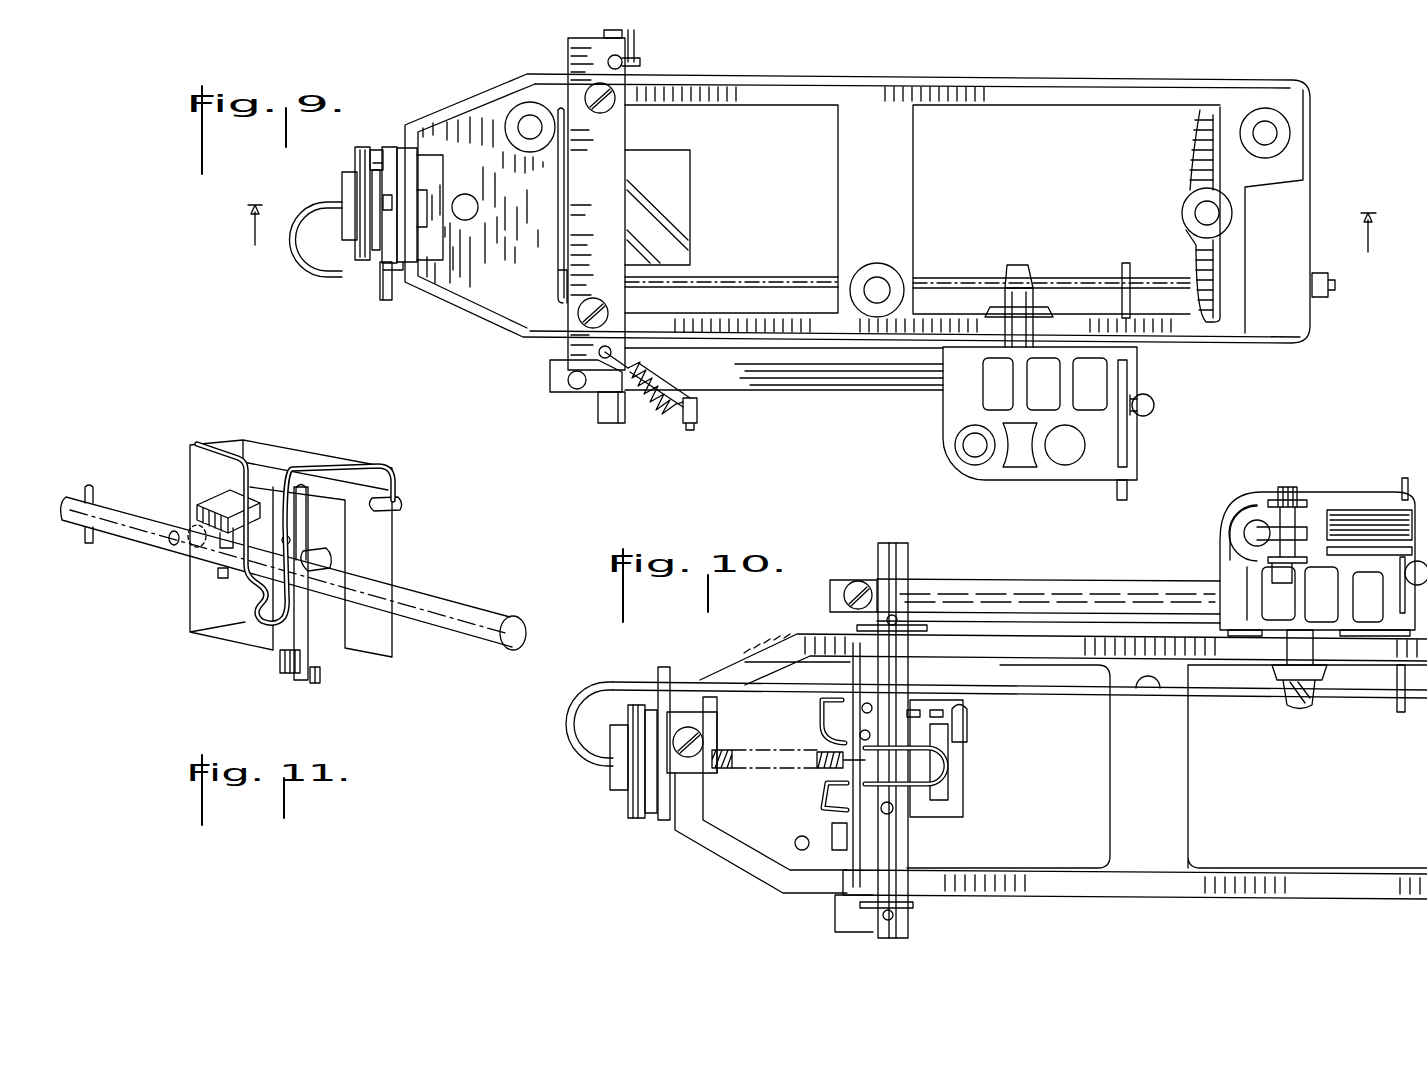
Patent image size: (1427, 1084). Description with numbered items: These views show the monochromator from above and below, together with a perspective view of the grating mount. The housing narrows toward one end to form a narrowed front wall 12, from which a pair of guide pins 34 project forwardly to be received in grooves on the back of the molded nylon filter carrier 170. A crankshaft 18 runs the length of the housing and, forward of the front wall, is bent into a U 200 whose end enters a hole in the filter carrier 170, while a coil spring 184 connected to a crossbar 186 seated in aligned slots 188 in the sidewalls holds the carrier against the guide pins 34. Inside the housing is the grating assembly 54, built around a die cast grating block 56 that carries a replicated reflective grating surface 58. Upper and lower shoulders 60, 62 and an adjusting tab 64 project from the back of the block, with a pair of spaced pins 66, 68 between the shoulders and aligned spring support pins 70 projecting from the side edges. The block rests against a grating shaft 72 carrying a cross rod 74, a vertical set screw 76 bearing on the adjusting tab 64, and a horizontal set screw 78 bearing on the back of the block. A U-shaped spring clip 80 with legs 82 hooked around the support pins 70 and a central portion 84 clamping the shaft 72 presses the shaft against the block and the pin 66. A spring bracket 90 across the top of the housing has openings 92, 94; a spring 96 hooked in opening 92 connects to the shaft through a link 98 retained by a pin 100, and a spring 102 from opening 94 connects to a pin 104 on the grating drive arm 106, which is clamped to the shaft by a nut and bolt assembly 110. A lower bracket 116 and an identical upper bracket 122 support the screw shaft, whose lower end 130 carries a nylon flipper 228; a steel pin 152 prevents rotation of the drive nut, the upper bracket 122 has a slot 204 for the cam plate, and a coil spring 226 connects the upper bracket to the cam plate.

In FIG. 9, the narrowed front wall 12 is at (815, 243).
In FIG. 9, the crankshaft 18 is at (800, 280).
In FIG. 10, the crankshaft 18 is at (1225, 694).
In FIG. 9, the guide pins 34 is at (376, 258).
In FIG. 10, the guide pins 34 is at (660, 808).
In FIG. 10, the grating assembly 54 is at (973, 802).
In FIG. 11, the grating assembly 54 is at (422, 550).
In FIG. 10, the grating block 56 is at (964, 775).
In FIG. 11, the grating block 56 is at (283, 455).
In FIG. 9, the replicated reflective grating surface 58 is at (682, 200).
In FIG. 11, the upper shoulder 60 is at (317, 483).
In FIG. 11, the lower shoulder 62 is at (313, 683).
In FIG. 11, the adjusting tab 64 is at (217, 498).
In FIG. 11, the pin 66 is at (340, 562).
In FIG. 11, the pin 68 is at (291, 539).
In FIG. 10, the spring support pins 70 is at (833, 830).
In FIG. 11, the spring support pins 70 is at (403, 498).
In FIG. 10, the grating shaft 72 is at (897, 860).
In FIG. 11, the grating shaft 72 is at (467, 612).
In FIG. 10, the cross rod 74 is at (968, 717).
In FIG. 11, the cross rod 74 is at (297, 633).
In FIG. 11, the vertical set screw 76 is at (220, 576).
In FIG. 10, the horizontal set screw 78 is at (895, 812).
In FIG. 11, the horizontal set screw 78 is at (175, 547).
In FIG. 11, the spring clip 80 is at (304, 510).
In FIG. 10, the legs 82 is at (825, 787).
In FIG. 11, the legs 82 is at (304, 510).
In FIG. 10, the central portion 84 is at (947, 753).
In FIG. 11, the central portion 84 is at (253, 588).
In FIG. 9, the spring bracket 90 is at (566, 294).
In FIG. 9, the opening 92 is at (568, 54).
In FIG. 9, the opening 94 is at (565, 353).
In FIG. 9, the spring 96 is at (642, 65).
In FIG. 10, the link 98 is at (913, 905).
In FIG. 10, the pin 100 is at (900, 920).
In FIG. 11, the pin 100 is at (95, 490).
In FIG. 9, the spring 102 is at (658, 407).
In FIG. 9, the pin 104 is at (699, 410).
In FIG. 9, the grating drive arm 106 is at (813, 380).
In FIG. 10, the grating drive arm 106 is at (997, 578).
In FIG. 10, the nut and bolt assembly 110 is at (857, 580).
In FIG. 10, the lower bracket 116 is at (1227, 528).
In FIG. 9, the upper bracket 122 is at (957, 467).
In FIG. 10, the lower end of screw shaft 130 is at (1257, 522).
In FIG. 9, the pin 152 is at (1196, 175).
In FIG. 9, the filter carrier 170 is at (342, 182).
In FIG. 10, the filter carrier 170 is at (612, 790).
In FIG. 10, the coil spring 184 is at (728, 765).
In FIG. 10, the crossbar 186 is at (855, 808).
In FIG. 10, the slots 188 is at (847, 890).
In FIG. 9, the U 200 is at (308, 277).
In FIG. 10, the U 200 is at (582, 757).
In FIG. 9, the slot 204 is at (1127, 435).
In FIG. 9, the coil spring 226 is at (1154, 402).
In FIG. 10, the flipper 228 is at (1363, 510).